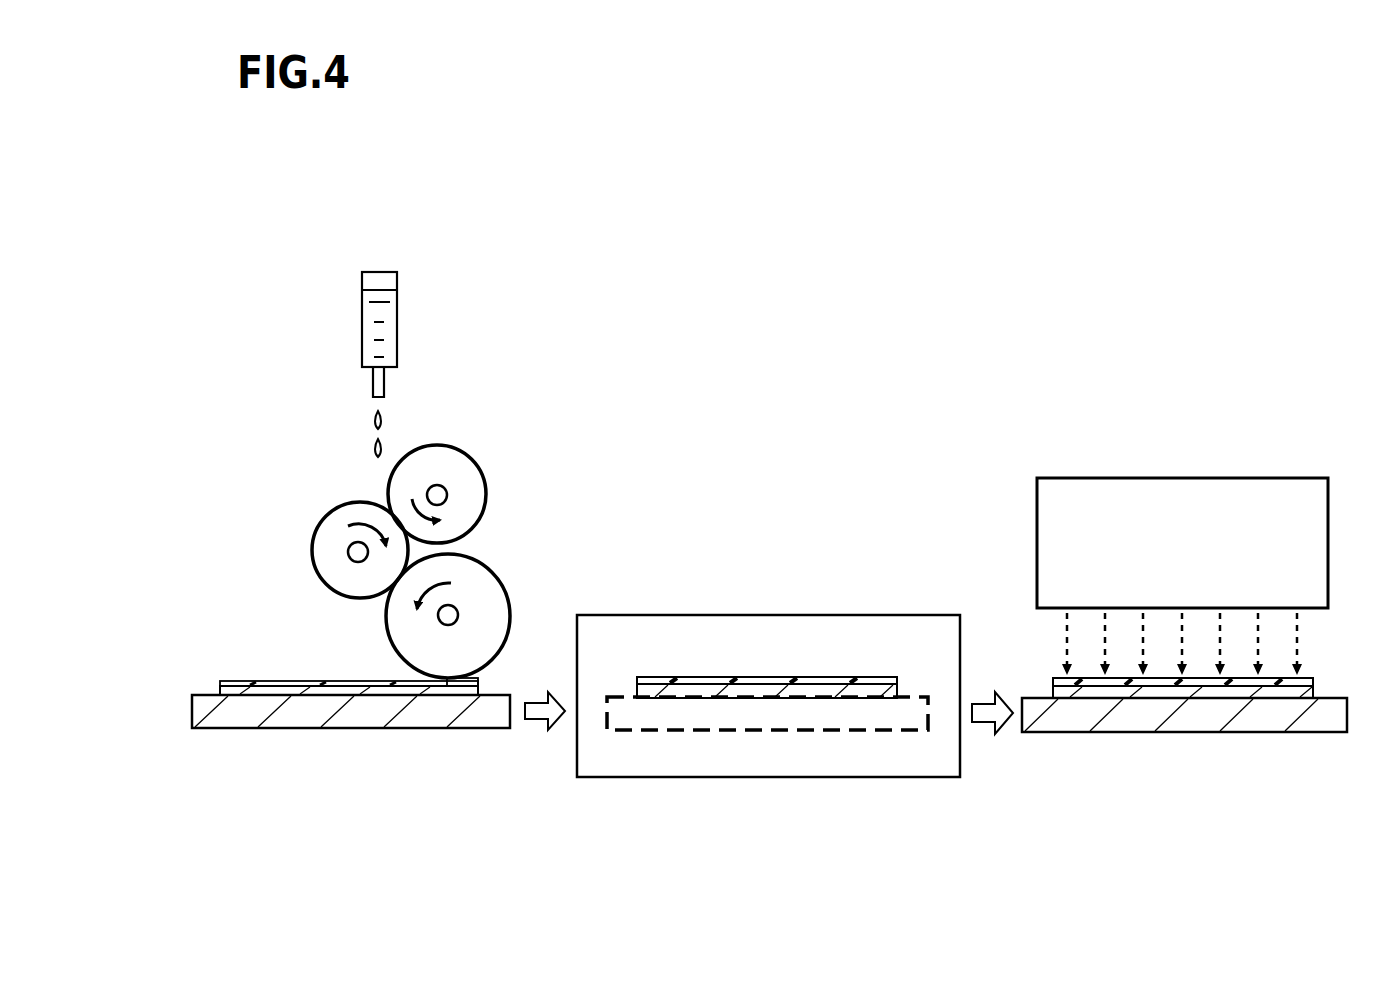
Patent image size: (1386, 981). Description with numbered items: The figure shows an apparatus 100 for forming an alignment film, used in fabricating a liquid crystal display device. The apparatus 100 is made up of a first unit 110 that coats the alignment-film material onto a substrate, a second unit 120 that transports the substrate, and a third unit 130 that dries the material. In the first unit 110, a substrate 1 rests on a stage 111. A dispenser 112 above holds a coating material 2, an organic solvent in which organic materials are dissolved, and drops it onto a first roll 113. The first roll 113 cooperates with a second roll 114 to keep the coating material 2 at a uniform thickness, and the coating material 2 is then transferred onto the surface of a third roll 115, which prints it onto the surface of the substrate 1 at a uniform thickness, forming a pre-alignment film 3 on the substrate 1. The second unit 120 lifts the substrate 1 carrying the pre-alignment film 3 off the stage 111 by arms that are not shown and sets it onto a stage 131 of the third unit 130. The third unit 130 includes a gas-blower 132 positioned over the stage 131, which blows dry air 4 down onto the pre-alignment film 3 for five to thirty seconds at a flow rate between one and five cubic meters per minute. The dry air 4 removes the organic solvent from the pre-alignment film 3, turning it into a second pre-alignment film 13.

The apparatus 100 is at (798, 150).
The first unit 110 is at (403, 237).
The second unit 120 is at (799, 240).
The third unit 130 is at (1208, 242).
The dispenser 112 is at (362, 334).
The coating material 2 is at (384, 419).
The first roll 113 is at (333, 513).
The second roll 114 is at (474, 461).
The third roll 115 is at (494, 566).
The stage 111 is at (290, 735).
The substrate 1 is at (262, 688).
The pre-alignment film 3 is at (455, 690).
The stage 131 is at (1068, 720).
The gas-blower 132 is at (1167, 478).
The dry air 4 is at (1300, 630).
The second pre-alignment film 13 is at (1258, 689).